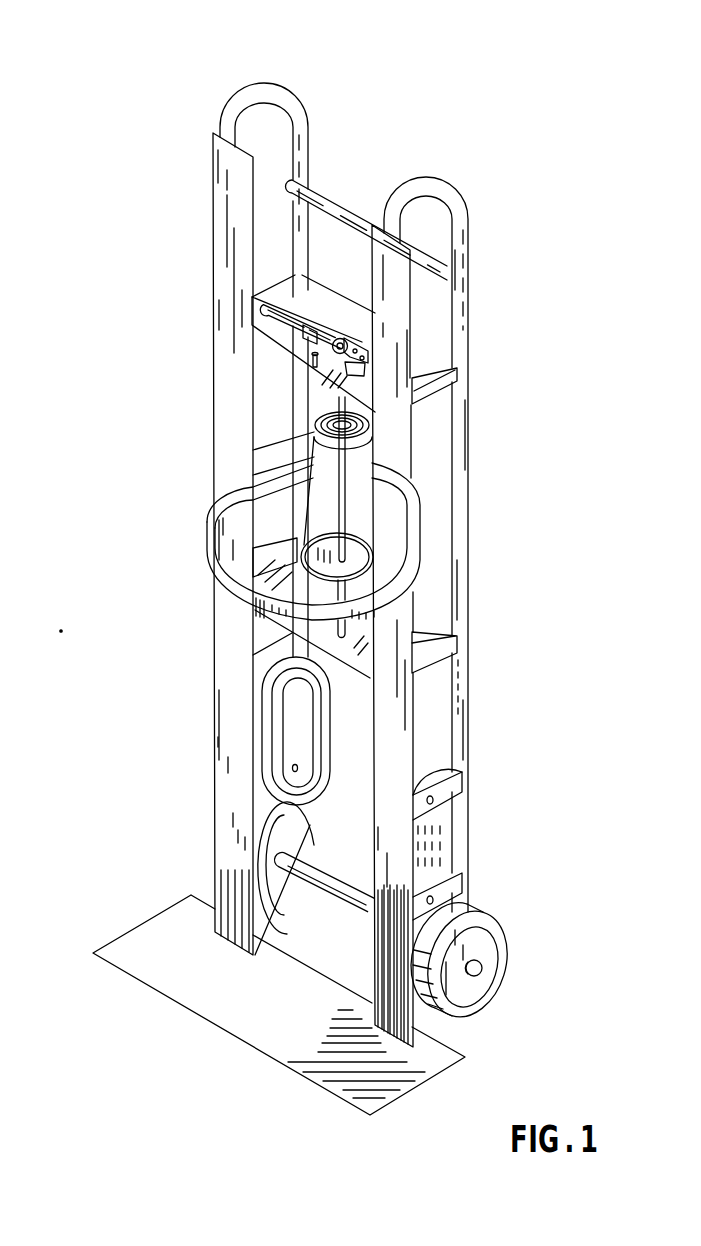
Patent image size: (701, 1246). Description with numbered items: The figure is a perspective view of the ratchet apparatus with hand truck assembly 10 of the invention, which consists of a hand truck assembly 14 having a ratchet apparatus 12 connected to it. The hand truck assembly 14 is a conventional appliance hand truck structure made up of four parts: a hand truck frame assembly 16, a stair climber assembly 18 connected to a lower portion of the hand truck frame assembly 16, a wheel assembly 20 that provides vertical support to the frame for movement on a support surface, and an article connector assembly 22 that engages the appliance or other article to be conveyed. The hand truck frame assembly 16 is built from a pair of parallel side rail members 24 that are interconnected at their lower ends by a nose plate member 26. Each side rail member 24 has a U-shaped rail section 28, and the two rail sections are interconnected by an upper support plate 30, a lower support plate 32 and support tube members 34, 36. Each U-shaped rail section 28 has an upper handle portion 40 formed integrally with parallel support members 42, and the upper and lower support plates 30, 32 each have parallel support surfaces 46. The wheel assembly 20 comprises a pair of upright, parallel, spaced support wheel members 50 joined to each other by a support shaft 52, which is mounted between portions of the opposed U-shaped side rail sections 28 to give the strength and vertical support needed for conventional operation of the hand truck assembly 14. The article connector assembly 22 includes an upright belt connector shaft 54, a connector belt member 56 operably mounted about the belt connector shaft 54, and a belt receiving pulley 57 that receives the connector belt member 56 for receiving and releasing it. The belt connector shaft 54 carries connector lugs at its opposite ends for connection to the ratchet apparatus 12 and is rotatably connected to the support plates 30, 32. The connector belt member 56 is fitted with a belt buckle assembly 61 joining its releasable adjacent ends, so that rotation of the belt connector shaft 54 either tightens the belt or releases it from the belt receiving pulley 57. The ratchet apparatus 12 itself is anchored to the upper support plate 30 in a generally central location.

The ratchet apparatus with hand truck assembly 10 is at (514, 259).
The ratchet apparatus 12 is at (365, 346).
The hand truck assembly 14 is at (213, 738).
The hand truck frame assembly 16 is at (462, 592).
The stair climber assembly 18 is at (268, 703).
The wheel assembly 20 is at (333, 900).
The article connector assembly 22 is at (415, 556).
The side rail member 24 is at (230, 311).
The nose plate member 26 is at (355, 1084).
The U-shaped rail section 28 is at (461, 690).
The upper support plate 30 is at (283, 330).
The lower support plate 32 is at (253, 657).
The support tube member 34 is at (372, 913).
The support tube member 36 is at (342, 203).
The upper handle portion 40 is at (263, 90).
The parallel support member 42 is at (457, 380).
The parallel support surface 46 is at (328, 325).
The support wheel member 50 is at (512, 963).
The support shaft 52 is at (283, 866).
The belt connector shaft 54 is at (343, 513).
The connector belt member 56 is at (275, 453).
The belt receiving pulley 57 is at (253, 487).
The belt buckle assembly 61 is at (265, 598).